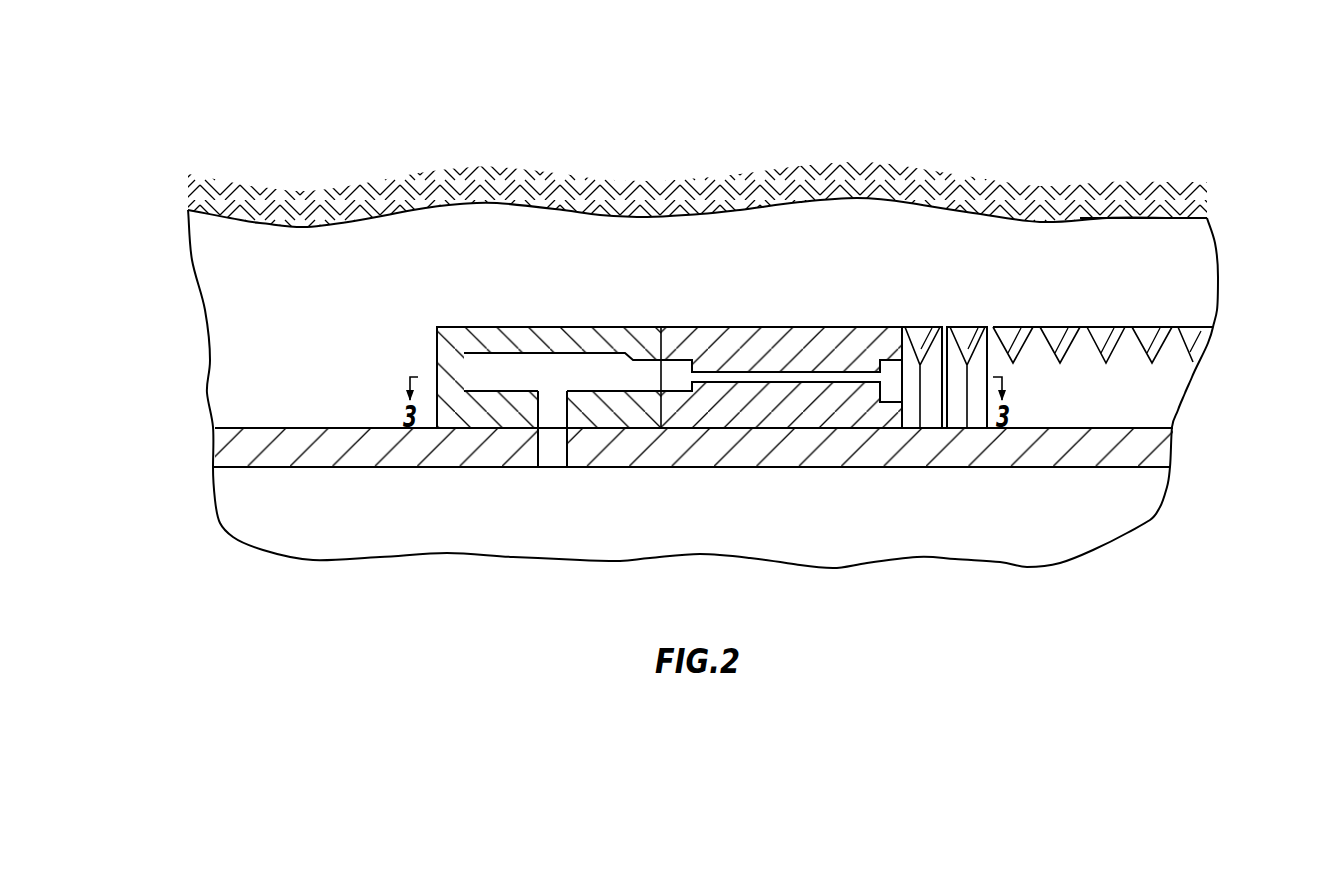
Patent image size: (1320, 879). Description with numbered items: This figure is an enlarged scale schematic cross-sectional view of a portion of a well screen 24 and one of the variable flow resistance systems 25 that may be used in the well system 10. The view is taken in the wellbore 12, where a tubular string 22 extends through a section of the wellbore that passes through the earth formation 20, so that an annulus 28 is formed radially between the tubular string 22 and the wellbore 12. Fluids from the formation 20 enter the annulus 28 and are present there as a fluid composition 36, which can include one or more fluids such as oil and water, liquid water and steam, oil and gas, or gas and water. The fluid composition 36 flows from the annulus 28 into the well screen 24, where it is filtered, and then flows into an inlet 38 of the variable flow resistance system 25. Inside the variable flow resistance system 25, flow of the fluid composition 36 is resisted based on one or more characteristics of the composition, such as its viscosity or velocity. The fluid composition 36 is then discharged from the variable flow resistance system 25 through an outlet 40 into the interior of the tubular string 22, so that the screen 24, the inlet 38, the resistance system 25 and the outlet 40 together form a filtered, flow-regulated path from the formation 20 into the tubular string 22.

The well system 10 is at (982, 133).
The wellbore 12 is at (1077, 221).
The earth formation 20 is at (686, 106).
The tubular string 22 is at (248, 426).
The well screen 24 is at (1054, 322).
The variable flow resistance system 25 is at (737, 322).
The annulus 28 is at (272, 247).
The fluid composition 36 is at (913, 383).
The inlet 38 is at (888, 372).
The outlet 40 is at (558, 450).